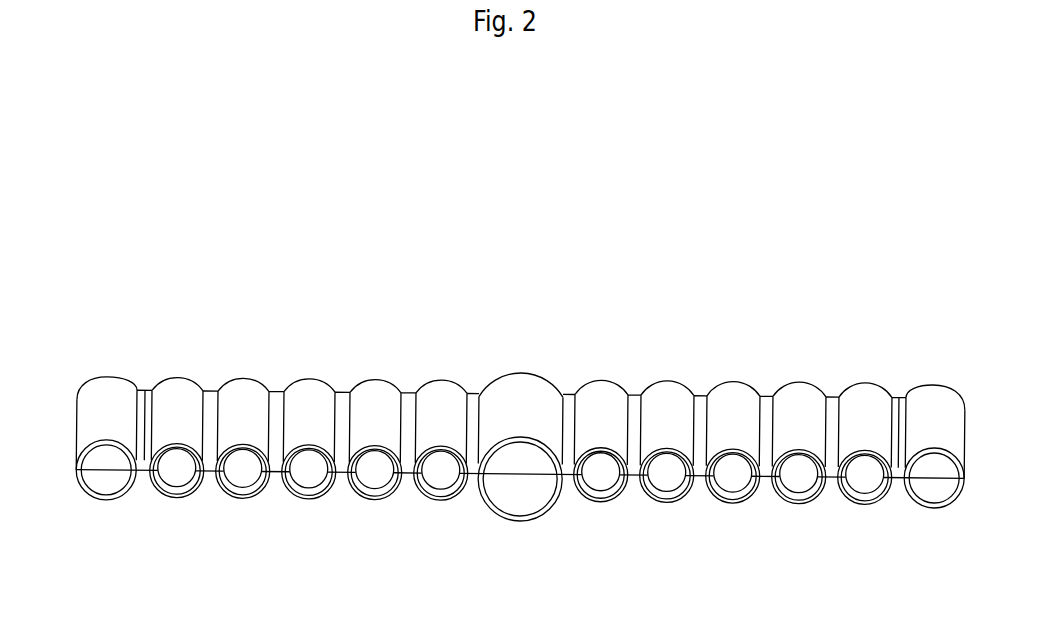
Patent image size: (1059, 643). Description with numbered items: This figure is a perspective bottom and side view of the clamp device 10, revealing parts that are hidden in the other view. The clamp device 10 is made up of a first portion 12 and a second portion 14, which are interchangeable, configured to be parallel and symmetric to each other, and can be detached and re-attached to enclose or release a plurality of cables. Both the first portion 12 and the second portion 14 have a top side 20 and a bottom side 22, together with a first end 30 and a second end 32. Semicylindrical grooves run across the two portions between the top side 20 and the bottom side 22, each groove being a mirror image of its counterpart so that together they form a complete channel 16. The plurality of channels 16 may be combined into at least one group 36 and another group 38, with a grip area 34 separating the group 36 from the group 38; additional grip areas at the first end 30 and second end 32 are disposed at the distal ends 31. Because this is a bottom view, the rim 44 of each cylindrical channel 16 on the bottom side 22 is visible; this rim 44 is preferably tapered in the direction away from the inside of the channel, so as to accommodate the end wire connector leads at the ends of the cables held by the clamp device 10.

The clamp device 10 is at (487, 289).
The first portion 12 is at (278, 485).
The second portion 14 is at (174, 412).
The channel 16 is at (305, 472).
The top side 20 is at (298, 373).
The bottom side 22 is at (181, 507).
The first end 30 is at (923, 392).
The distal end 31 is at (77, 380).
The second end 32 is at (101, 377).
The grip area 34 is at (521, 483).
The group 36 is at (371, 326).
The group 38 is at (675, 316).
The rim 44 is at (245, 483).